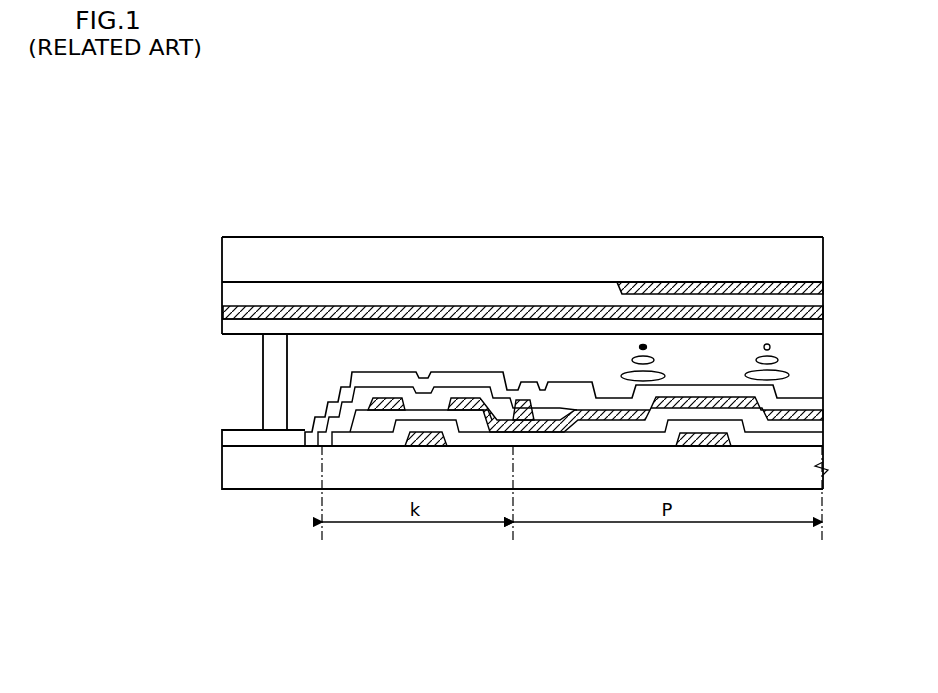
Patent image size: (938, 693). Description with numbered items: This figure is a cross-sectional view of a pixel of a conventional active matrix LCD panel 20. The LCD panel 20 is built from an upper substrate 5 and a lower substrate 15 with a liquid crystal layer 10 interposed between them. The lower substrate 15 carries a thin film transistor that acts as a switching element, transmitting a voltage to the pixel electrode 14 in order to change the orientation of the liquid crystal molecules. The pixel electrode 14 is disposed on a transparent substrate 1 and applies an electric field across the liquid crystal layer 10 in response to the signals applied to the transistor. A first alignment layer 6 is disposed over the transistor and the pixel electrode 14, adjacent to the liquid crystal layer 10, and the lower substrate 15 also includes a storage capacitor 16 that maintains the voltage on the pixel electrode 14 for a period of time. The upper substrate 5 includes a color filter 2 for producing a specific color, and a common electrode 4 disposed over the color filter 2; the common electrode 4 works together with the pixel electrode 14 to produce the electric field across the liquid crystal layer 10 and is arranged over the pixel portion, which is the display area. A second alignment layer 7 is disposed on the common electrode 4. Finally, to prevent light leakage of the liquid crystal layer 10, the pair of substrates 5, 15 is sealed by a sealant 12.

The transparent substrate 1 is at (551, 359).
The color filter 2 is at (680, 290).
The common electrode 4 is at (288, 312).
The upper substrate 5 is at (539, 363).
The first alignment layer 6 is at (230, 438).
The second alignment layer 7 is at (230, 325).
The liquid crystal layer 10 is at (828, 336).
The sealant 12 is at (263, 383).
The pixel electrode 14 is at (592, 412).
The lower substrate 15 is at (515, 508).
The storage capacitor 16 is at (703, 437).
The LCD panel 20 is at (380, 220).